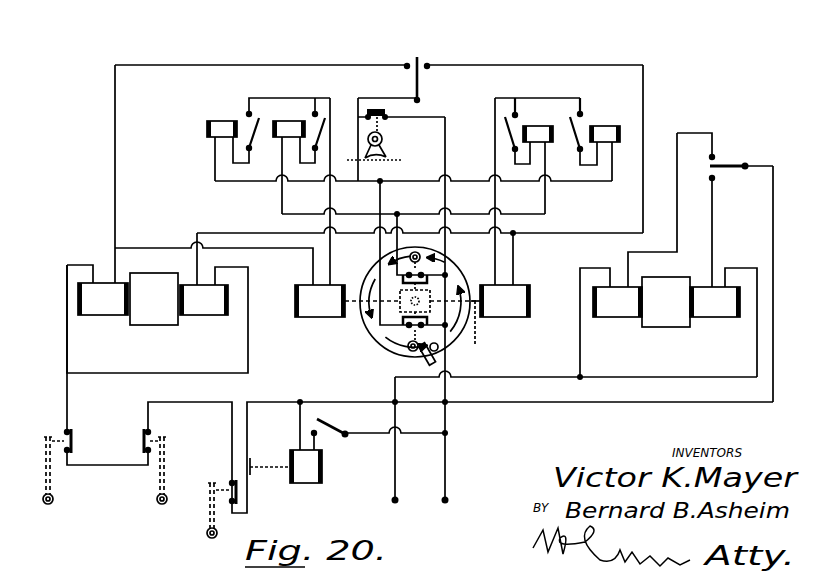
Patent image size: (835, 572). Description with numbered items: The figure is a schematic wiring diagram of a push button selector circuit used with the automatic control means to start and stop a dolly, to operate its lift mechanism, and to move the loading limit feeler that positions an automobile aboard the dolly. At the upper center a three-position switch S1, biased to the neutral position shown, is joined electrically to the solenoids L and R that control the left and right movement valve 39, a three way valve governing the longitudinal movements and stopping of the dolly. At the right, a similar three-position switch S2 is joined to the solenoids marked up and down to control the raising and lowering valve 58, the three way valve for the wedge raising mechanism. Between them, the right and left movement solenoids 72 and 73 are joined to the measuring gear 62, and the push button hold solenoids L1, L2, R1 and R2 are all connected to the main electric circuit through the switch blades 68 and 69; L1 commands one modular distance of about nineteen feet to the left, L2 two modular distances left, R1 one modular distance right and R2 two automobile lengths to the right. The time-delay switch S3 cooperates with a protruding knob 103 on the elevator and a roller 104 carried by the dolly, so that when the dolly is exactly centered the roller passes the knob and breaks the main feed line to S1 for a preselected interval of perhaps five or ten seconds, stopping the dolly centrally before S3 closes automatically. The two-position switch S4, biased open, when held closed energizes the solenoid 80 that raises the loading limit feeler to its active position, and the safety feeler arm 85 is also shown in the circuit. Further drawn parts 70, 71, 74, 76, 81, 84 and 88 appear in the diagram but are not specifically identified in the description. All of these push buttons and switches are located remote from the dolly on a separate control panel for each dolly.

The three-position switch S1 is at (424, 47).
The three-position switch S2 is at (752, 134).
The time-delay switch S3 is at (393, 139).
The two-position switch S4 is at (337, 447).
The holding solenoid of push button switch L1 is at (299, 130).
The holding solenoid of push button switch L2 is at (268, 130).
The holding solenoid of push button switch R1 is at (537, 131).
The holding solenoid of push button switch R2 is at (595, 131).
The three way valve 39 is at (158, 326).
The three way valve 58 is at (665, 327).
The measuring gear 62 is at (412, 307).
The switch blade 68 is at (418, 253).
The switch blade 69 is at (406, 352).
The lever 70 is at (428, 364).
The pivot 71 is at (438, 341).
The right movement solenoid 72 is at (512, 319).
The left movement solenoid 73 is at (311, 319).
The armature link 74 is at (476, 330).
The plunger 76 is at (206, 514).
The solenoid 80 is at (307, 484).
The plunger link 81 is at (264, 466).
The contact 84 is at (230, 485).
The safety feeler arm 85 is at (59, 485).
The switch contacts 88 is at (145, 434).
The protruding knob 103 is at (378, 160).
The roller 104 is at (369, 136).